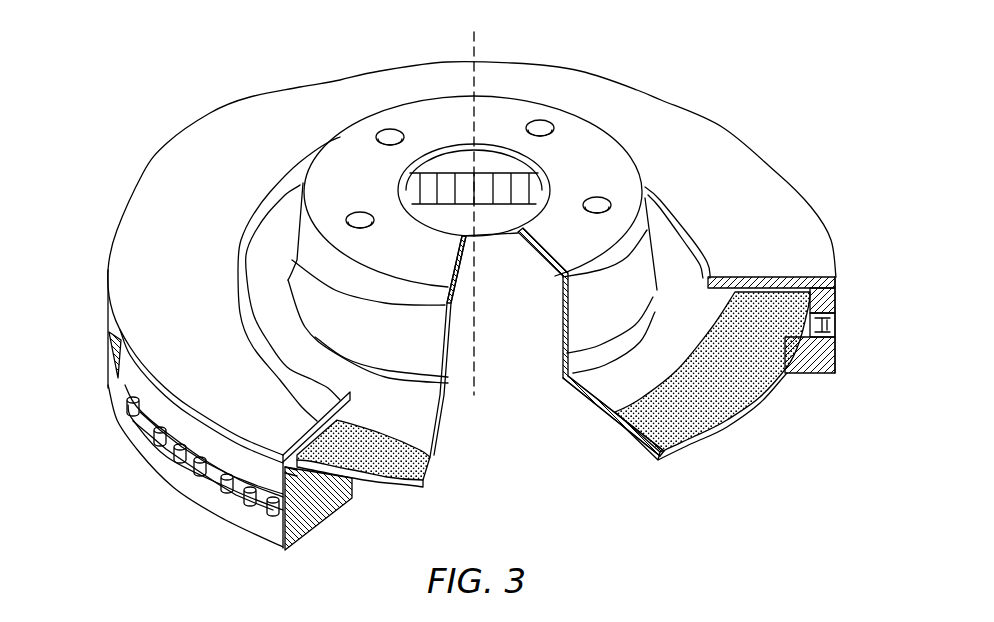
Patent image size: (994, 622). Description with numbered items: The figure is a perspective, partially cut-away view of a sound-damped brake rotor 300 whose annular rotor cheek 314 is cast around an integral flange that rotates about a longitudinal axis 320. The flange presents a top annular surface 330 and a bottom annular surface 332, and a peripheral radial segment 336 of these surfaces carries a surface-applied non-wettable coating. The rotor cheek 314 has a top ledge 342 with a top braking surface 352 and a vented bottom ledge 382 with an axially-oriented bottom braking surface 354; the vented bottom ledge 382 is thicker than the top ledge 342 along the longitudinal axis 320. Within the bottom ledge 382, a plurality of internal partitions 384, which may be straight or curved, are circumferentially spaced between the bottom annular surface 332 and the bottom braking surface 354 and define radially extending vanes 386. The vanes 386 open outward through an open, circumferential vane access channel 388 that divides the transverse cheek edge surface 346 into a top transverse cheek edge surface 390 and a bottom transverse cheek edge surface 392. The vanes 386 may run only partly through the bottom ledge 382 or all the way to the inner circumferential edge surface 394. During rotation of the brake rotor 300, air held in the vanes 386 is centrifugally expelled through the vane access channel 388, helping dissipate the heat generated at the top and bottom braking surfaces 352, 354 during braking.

The brake rotor 300 is at (188, 92).
The longitudinal axis 320 is at (482, 42).
The annular rotor cheek 314 is at (106, 266).
The transverse cheek edge surface 346 is at (104, 357).
The top ledge 342 is at (257, 527).
The bottom transverse cheek edge surface 392 is at (252, 529).
The vented bottom ledge 382 is at (283, 551).
The bottom braking surface 354 is at (302, 533).
The open circumferential vane access channel 388 is at (132, 411).
The internal partitions 384 is at (187, 473).
The radially extending vanes 386 is at (215, 476).
The top transverse cheek edge surface 390 is at (233, 482).
The top braking surface 352 is at (317, 421).
The top annular surface 330 is at (605, 382).
The bottom annular surface 332 is at (610, 450).
The peripheral radial segment 336 is at (400, 465).
The inner circumferential edge surface 394 is at (353, 481).